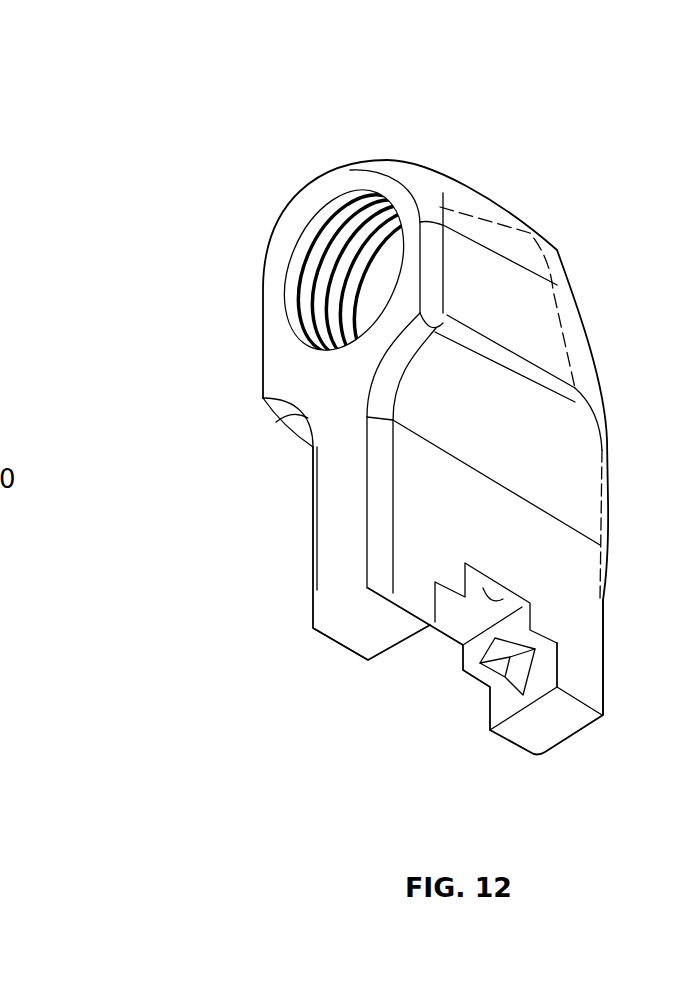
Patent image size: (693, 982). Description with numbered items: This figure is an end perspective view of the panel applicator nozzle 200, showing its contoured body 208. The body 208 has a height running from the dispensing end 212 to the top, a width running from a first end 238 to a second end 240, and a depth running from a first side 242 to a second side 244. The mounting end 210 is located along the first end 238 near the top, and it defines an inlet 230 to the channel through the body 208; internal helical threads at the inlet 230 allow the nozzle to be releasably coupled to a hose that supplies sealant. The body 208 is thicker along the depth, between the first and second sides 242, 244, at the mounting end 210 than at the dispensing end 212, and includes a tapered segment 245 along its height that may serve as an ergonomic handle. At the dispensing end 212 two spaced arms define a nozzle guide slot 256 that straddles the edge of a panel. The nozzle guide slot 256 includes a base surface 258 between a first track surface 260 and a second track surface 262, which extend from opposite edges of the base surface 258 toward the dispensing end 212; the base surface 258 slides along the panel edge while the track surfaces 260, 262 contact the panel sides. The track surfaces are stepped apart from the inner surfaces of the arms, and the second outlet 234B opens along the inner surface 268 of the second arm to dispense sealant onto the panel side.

The applicator nozzle 200 is at (453, 134).
The body 208 is at (516, 248).
The mounting end 210 is at (268, 250).
The inlet 230 is at (334, 218).
The first end 238 is at (316, 381).
The first side 242 is at (312, 493).
The tapered segment 245 is at (430, 380).
The second side 244 is at (508, 513).
The base surface 258 is at (503, 618).
The first track surface 260 is at (472, 590).
The second track surface 262 is at (495, 603).
The nozzle guide slot 256 is at (436, 666).
The inner surface of the second arm 268 is at (540, 672).
The second outlet 234B is at (512, 678).
The second end 240 is at (612, 645).
The dispensing end 212 is at (387, 692).